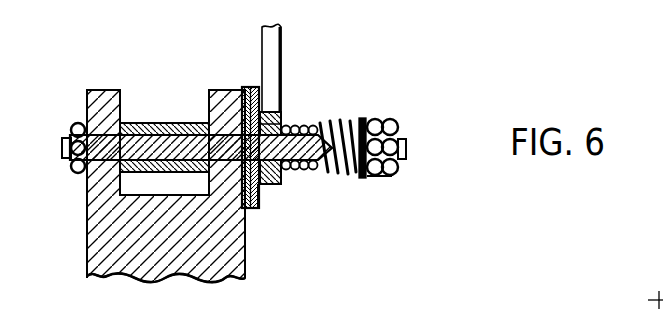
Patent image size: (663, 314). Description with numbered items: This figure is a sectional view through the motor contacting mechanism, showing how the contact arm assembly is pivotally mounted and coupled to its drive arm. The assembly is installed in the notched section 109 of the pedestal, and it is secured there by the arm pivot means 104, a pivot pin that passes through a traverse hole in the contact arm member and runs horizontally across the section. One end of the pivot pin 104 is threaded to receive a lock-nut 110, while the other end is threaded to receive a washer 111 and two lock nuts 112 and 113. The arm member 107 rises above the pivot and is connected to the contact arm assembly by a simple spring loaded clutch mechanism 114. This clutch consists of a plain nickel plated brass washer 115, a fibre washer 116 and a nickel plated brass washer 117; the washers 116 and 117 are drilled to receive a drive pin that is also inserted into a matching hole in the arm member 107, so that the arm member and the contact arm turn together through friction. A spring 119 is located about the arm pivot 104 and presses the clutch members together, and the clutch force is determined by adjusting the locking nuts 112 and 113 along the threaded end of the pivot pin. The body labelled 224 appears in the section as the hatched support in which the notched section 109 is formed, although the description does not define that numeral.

The arm pivot means 104 is at (108, 166).
The arm member 107 is at (281, 48).
The notched section 109 is at (160, 124).
The lock-nut 110 is at (75, 123).
The washer 111 is at (363, 117).
The lock nut 112 is at (378, 120).
The lock nut 113 is at (392, 177).
The spring loaded clutch mechanism 114 is at (249, 82).
The plain nickel plated brass washer 115 is at (258, 216).
The fibre washer 116 is at (261, 214).
The nickel plated brass washer 117 is at (262, 212).
The spring 119 is at (306, 122).
The housing wall 224 is at (59, 270).